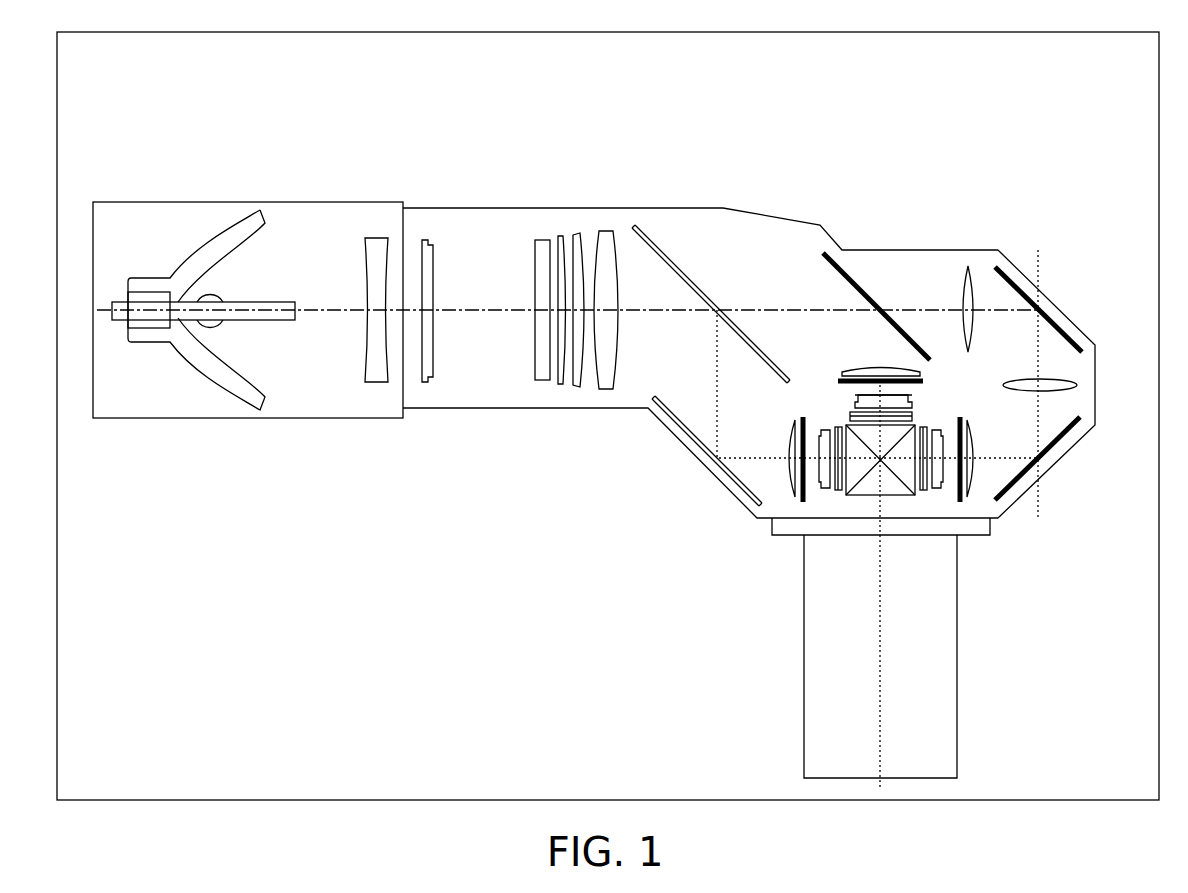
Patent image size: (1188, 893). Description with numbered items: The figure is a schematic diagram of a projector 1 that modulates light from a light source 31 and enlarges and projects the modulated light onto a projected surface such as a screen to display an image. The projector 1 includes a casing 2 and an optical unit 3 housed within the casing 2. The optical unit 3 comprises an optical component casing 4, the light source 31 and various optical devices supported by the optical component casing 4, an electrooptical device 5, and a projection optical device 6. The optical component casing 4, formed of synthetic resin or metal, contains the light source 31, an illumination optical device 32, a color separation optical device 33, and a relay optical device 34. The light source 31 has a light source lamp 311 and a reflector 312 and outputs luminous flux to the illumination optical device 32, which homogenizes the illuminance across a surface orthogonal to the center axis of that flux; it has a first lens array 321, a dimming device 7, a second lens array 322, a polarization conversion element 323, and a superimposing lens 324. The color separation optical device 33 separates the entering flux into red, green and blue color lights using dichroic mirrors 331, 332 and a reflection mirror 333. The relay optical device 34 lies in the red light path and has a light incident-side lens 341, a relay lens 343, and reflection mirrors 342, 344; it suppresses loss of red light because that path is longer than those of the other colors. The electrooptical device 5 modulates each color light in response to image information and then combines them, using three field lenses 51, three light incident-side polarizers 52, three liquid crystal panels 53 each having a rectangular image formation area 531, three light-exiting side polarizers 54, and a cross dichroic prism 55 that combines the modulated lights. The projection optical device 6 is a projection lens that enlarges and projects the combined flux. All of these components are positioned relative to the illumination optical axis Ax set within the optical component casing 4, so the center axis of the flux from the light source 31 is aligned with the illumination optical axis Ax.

The projector 1 is at (263, 17).
The casing 2 is at (725, 31).
The optical unit 3 is at (623, 457).
The light source 31 is at (322, 348).
The light source lamp 311 is at (275, 322).
The reflector 312 is at (222, 416).
The illumination optical device 32 is at (533, 330).
The first lens array 321 is at (430, 384).
The second lens array 322 is at (560, 386).
The polarization conversion element 323 is at (580, 388).
The superimposing lens 324 is at (619, 346).
The optical component casing 4 is at (620, 207).
The dimming device 7 is at (546, 238).
The color separation optical device 33 is at (764, 251).
The dichroic mirror 331 is at (672, 256).
The dichroic mirror 332 is at (868, 274).
The reflection mirror 333 is at (738, 490).
The relay optical device 34 is at (1101, 326).
The light incident-side lens 341 is at (968, 264).
The reflection mirror 342 is at (1024, 291).
The relay lens 343 is at (1063, 386).
The reflection mirror 344 is at (1066, 440).
The electrooptical device 5 is at (874, 467).
The field lens 51 is at (848, 370).
The light incident-side polarizer 52 is at (787, 424).
The liquid crystal panel 53 is at (855, 400).
The image formation area 531 is at (846, 394).
The light-exiting side polarizer 54 is at (924, 428).
The cross dichroic prism 55 is at (880, 496).
The projection optical device 6 is at (943, 659).
The illumination optical axis Ax is at (487, 300).